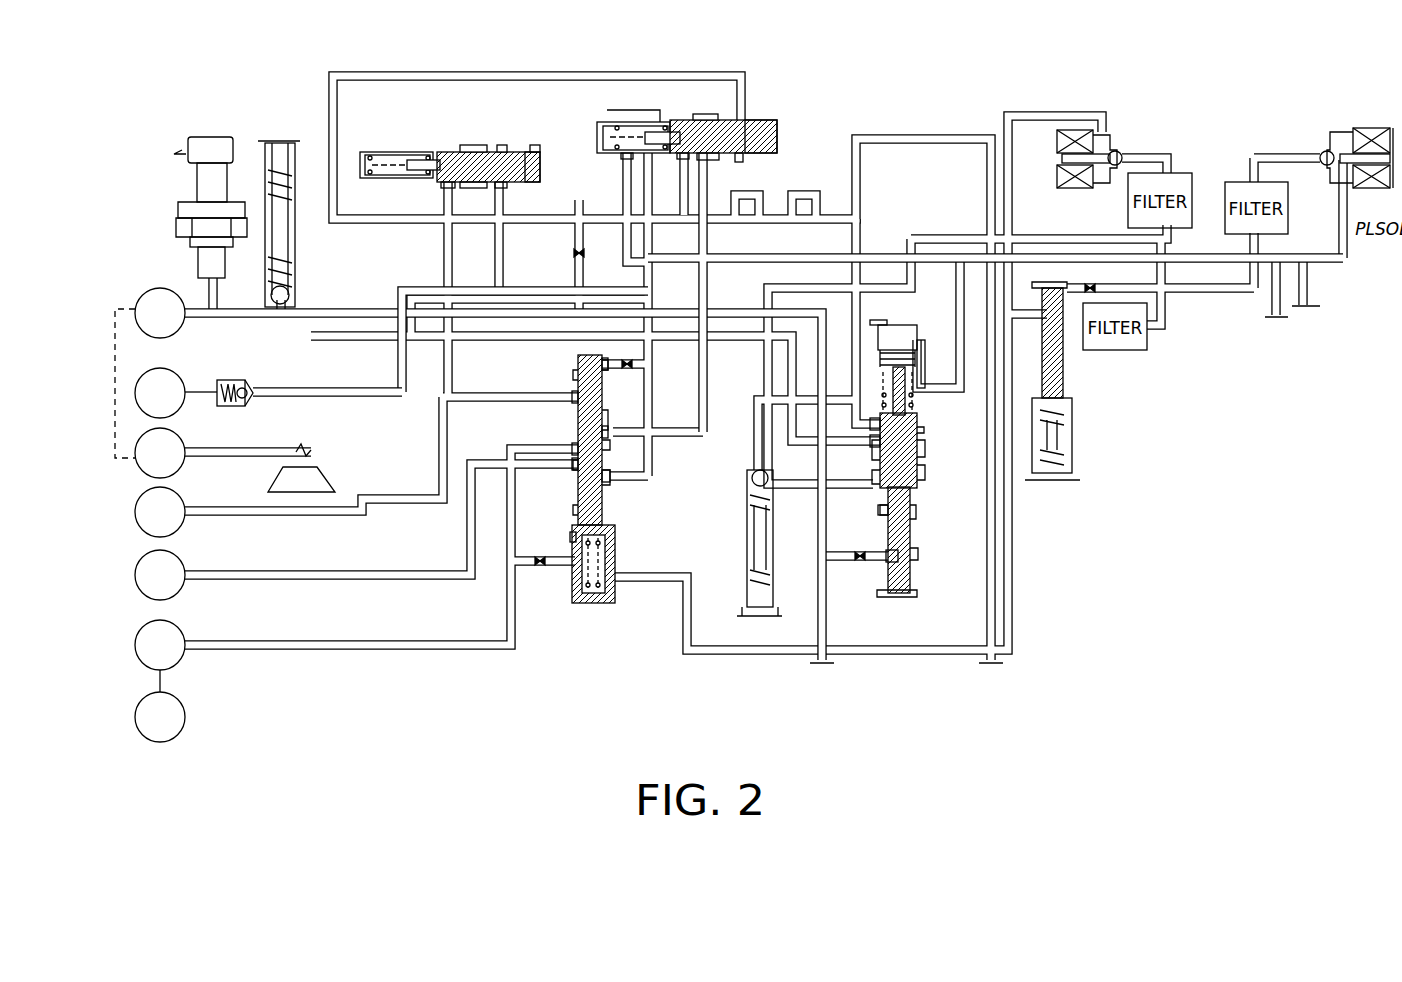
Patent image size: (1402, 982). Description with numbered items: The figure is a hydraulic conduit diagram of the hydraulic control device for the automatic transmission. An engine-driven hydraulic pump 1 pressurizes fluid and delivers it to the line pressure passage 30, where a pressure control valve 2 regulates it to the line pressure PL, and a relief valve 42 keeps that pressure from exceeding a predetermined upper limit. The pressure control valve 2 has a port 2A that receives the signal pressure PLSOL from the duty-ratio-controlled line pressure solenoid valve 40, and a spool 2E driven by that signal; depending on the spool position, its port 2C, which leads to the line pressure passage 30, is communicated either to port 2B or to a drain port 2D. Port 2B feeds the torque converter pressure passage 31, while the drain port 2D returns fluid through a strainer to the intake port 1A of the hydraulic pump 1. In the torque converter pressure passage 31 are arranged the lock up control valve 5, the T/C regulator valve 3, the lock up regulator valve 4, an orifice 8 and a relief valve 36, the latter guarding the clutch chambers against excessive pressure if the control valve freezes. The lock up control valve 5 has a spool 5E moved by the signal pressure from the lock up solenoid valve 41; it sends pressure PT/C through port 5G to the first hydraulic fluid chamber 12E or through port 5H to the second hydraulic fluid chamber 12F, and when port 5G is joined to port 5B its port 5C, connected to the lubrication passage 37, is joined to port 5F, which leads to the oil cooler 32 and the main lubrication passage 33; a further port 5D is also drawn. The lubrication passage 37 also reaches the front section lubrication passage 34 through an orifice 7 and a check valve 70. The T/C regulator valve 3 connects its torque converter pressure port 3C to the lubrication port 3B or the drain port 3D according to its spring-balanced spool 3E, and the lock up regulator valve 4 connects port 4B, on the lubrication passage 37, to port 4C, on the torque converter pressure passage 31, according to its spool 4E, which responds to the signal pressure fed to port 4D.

The hydraulic pump 1 is at (151, 292).
The intake port 1A is at (188, 448).
The pressure control valve 2 is at (922, 461).
The port 2A is at (937, 357).
The port 2B is at (881, 360).
The port 2C is at (854, 459).
The drain port 2D is at (857, 515).
The spool 2E is at (913, 546).
The T/C regulator valve 3 is at (450, 135).
The lubrication port 3B is at (536, 197).
The torque converter pressure port 3C is at (476, 221).
The drain port 3D is at (417, 196).
The spool 3E is at (553, 157).
The lock up regulator valve 4 is at (678, 116).
The port 4B is at (724, 172).
The port 4C is at (666, 179).
The port 4D is at (605, 177).
The spool 4E is at (772, 111).
The lock up control valve 5 is at (573, 516).
The port 5B is at (634, 502).
The port 5C is at (649, 451).
The port 5D is at (646, 383).
The spool 5E is at (543, 381).
The port 5F is at (545, 432).
The port 5G is at (548, 478).
The port 5H is at (547, 538).
The orifice 7 is at (327, 421).
The orifice 8 is at (556, 253).
The first hydraulic fluid chamber 12E is at (134, 566).
The second hydraulic fluid chamber 12F is at (134, 502).
The line pressure passage 30 is at (594, 473).
The torque converter pressure passage 31 is at (995, 308).
The oil cooler 32 is at (140, 632).
The main lubrication passage 33 is at (140, 706).
The front section lubrication passage 34 is at (148, 376).
The relief valve 36 is at (736, 543).
The lubrication passage 37 is at (577, 319).
The line pressure solenoid valve 40 is at (1343, 125).
The lock up solenoid valve 41 is at (1067, 177).
The relief valve 42 is at (269, 197).
The check valve 70 is at (230, 369).